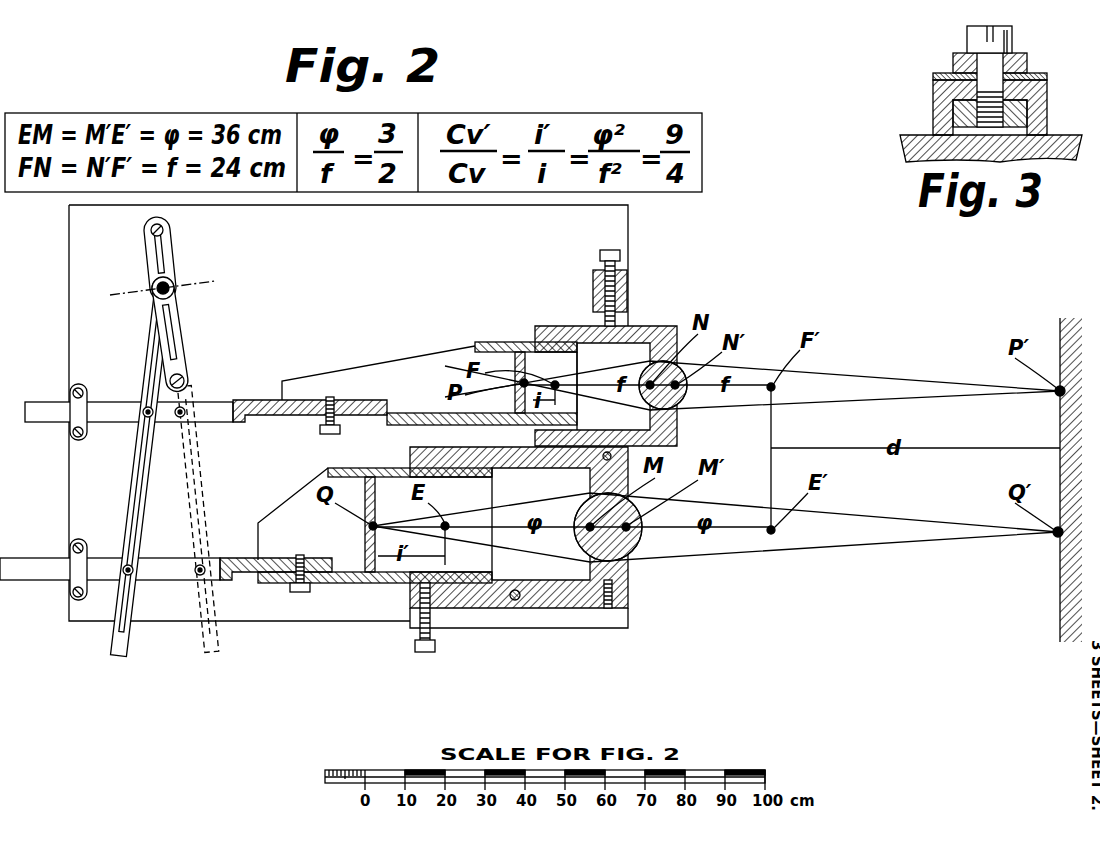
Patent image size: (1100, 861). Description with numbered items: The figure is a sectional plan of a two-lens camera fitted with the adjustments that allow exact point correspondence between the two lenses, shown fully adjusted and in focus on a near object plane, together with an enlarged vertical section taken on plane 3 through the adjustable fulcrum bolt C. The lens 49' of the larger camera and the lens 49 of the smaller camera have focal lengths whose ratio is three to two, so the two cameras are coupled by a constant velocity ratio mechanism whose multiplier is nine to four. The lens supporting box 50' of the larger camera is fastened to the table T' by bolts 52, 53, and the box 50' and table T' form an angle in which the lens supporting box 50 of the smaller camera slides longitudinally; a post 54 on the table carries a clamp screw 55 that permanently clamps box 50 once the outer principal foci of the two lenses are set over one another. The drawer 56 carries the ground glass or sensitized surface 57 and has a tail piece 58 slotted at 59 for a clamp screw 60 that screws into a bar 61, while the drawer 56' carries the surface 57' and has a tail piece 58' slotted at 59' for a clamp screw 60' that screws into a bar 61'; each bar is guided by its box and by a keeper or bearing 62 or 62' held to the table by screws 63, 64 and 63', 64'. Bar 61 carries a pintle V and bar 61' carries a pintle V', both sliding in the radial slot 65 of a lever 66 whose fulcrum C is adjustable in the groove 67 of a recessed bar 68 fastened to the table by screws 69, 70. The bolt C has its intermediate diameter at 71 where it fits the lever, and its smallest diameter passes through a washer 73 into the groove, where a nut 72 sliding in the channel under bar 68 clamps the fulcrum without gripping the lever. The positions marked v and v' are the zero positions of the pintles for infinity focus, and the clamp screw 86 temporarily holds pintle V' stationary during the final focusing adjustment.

In FIG. 2, the lens 49 is at (679, 401).
In FIG. 2, the lens 49' is at (632, 540).
In FIG. 2, the lens supporting box 50 is at (605, 364).
In FIG. 2, the lens supporting box 50' is at (519, 558).
In FIG. 2, the bolt 52 is at (515, 590).
In FIG. 2, the bolt 53 is at (603, 460).
In FIG. 2, the post 54 is at (628, 283).
In FIG. 2, the clamp screw 55 is at (606, 250).
In FIG. 2, the drawer 56 is at (513, 352).
In FIG. 2, the drawer 56' is at (375, 568).
In FIG. 2, the ground glass or sensitized surface 57 is at (464, 382).
In FIG. 2, the sensitized or ground glass surface 57' is at (334, 524).
In FIG. 2, the tail piece 58 is at (378, 355).
In FIG. 2, the tail piece 58' is at (284, 511).
In FIG. 2, the slot 59 is at (306, 439).
In FIG. 2, the slot 59' is at (315, 620).
In FIG. 2, the clamp screw 60 is at (307, 375).
In FIG. 2, the clamp screw 60' is at (280, 605).
In FIG. 2, the bar 61 is at (301, 393).
In FIG. 2, the bar 61' is at (166, 543).
In FIG. 2, the keeper or bearing 62 is at (48, 382).
In FIG. 2, the keeper or bearing 62' is at (46, 536).
In FIG. 2, the screw 63 is at (83, 387).
In FIG. 2, the screw 63' is at (84, 547).
In FIG. 2, the screw 64 is at (48, 443).
In FIG. 2, the screw 64' is at (48, 598).
In FIG. 2, the radial slot 65 is at (141, 459).
In FIG. 2, the lever 66 is at (143, 505).
In FIG. 3, the lever 66 is at (953, 60).
In FIG. 2, the groove 67 is at (172, 336).
In FIG. 2, the recessed bar 68 is at (172, 247).
In FIG. 3, the recessed bar 68 is at (933, 98).
In FIG. 2, the screw 69 is at (151, 229).
In FIG. 2, the screw 70 is at (183, 378).
In FIG. 3, the cylindrical part 71 is at (987, 58).
In FIG. 3, the nut 72 is at (1027, 113).
In FIG. 2, the washer 73 is at (174, 281).
In FIG. 3, the washer 73 is at (1043, 77).
In FIG. 2, the clamp screw 86 is at (435, 646).
In FIG. 2, the section plane 3 is at (163, 290).
In FIG. 2, the fulcrum bolt C is at (158, 283).
In FIG. 3, the fulcrum bolt C is at (1005, 31).
In FIG. 2, the pintle V is at (129, 390).
In FIG. 2, the pintle V' is at (96, 607).
In FIG. 2, the zero position v is at (196, 428).
In FIG. 2, the zero position v' is at (183, 588).
In FIG. 2, the table T' is at (377, 414).
In FIG. 3, the table T' is at (962, 139).